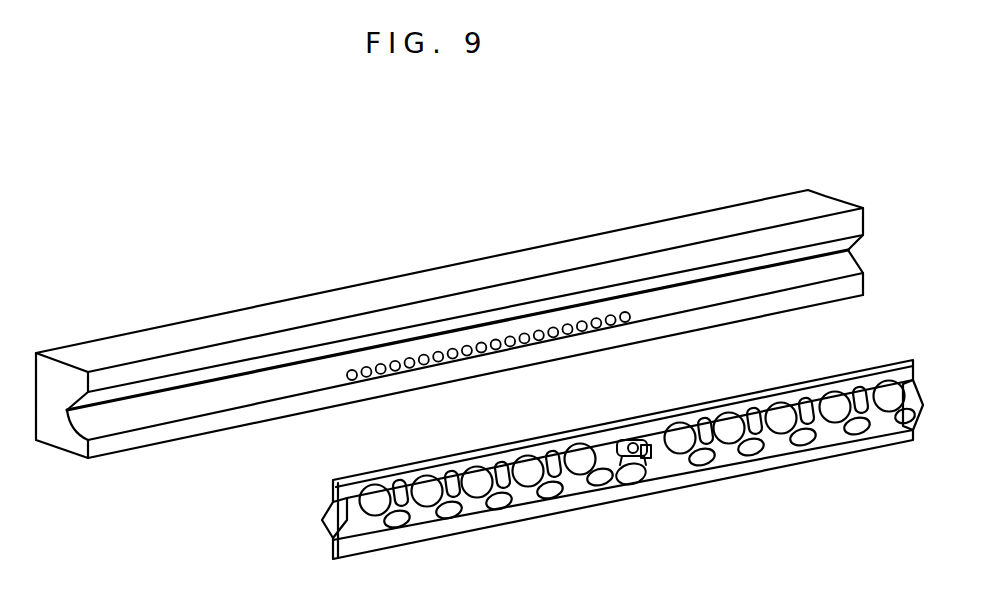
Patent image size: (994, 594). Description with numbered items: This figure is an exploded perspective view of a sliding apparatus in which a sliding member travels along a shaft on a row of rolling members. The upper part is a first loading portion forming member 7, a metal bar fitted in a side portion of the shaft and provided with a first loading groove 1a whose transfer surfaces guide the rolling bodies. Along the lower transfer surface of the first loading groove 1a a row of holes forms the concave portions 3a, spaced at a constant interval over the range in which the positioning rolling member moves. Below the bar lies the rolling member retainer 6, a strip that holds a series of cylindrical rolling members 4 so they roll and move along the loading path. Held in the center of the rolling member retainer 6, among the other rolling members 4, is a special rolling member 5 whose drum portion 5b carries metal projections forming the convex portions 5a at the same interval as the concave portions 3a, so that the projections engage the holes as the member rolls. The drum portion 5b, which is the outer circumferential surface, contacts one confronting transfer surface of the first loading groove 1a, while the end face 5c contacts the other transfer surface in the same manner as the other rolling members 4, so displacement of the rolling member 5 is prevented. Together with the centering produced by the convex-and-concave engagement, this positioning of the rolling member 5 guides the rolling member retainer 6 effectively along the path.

The first loading portion forming member 7 is at (60, 432).
The first loading groove 1a is at (113, 418).
The concave portions 3a is at (380, 375).
The rolling members 4 is at (428, 521).
The rolling member 5 is at (637, 461).
The convex portions 5a is at (634, 443).
The drum portion 5b is at (643, 466).
The end face 5c is at (631, 484).
The rolling member retainer 6 is at (484, 521).